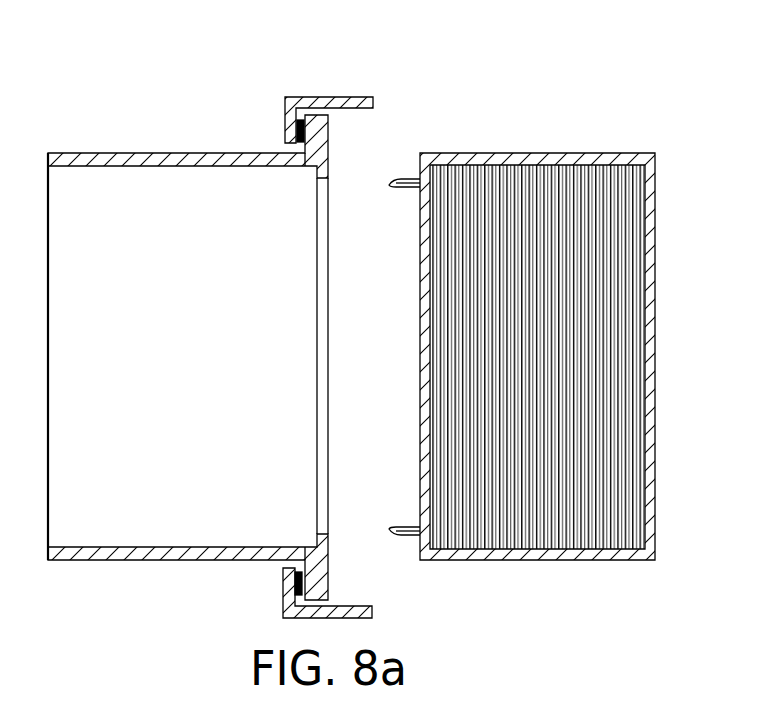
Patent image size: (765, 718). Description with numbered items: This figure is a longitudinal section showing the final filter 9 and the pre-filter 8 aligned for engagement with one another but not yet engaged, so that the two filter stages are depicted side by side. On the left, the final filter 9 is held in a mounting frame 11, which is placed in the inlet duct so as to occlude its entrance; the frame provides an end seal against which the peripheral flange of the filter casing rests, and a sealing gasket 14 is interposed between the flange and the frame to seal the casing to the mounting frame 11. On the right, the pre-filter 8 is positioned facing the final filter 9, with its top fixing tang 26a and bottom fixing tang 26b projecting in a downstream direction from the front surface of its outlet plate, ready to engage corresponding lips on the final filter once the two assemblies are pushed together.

The pre-filter 8 is at (531, 153).
The final filter 9 is at (104, 152).
The mounting frame 11 is at (321, 97).
The sealing gasket 14 is at (297, 131).
The top fixing tang 26a is at (401, 179).
The bottom fixing tang 26b is at (397, 535).